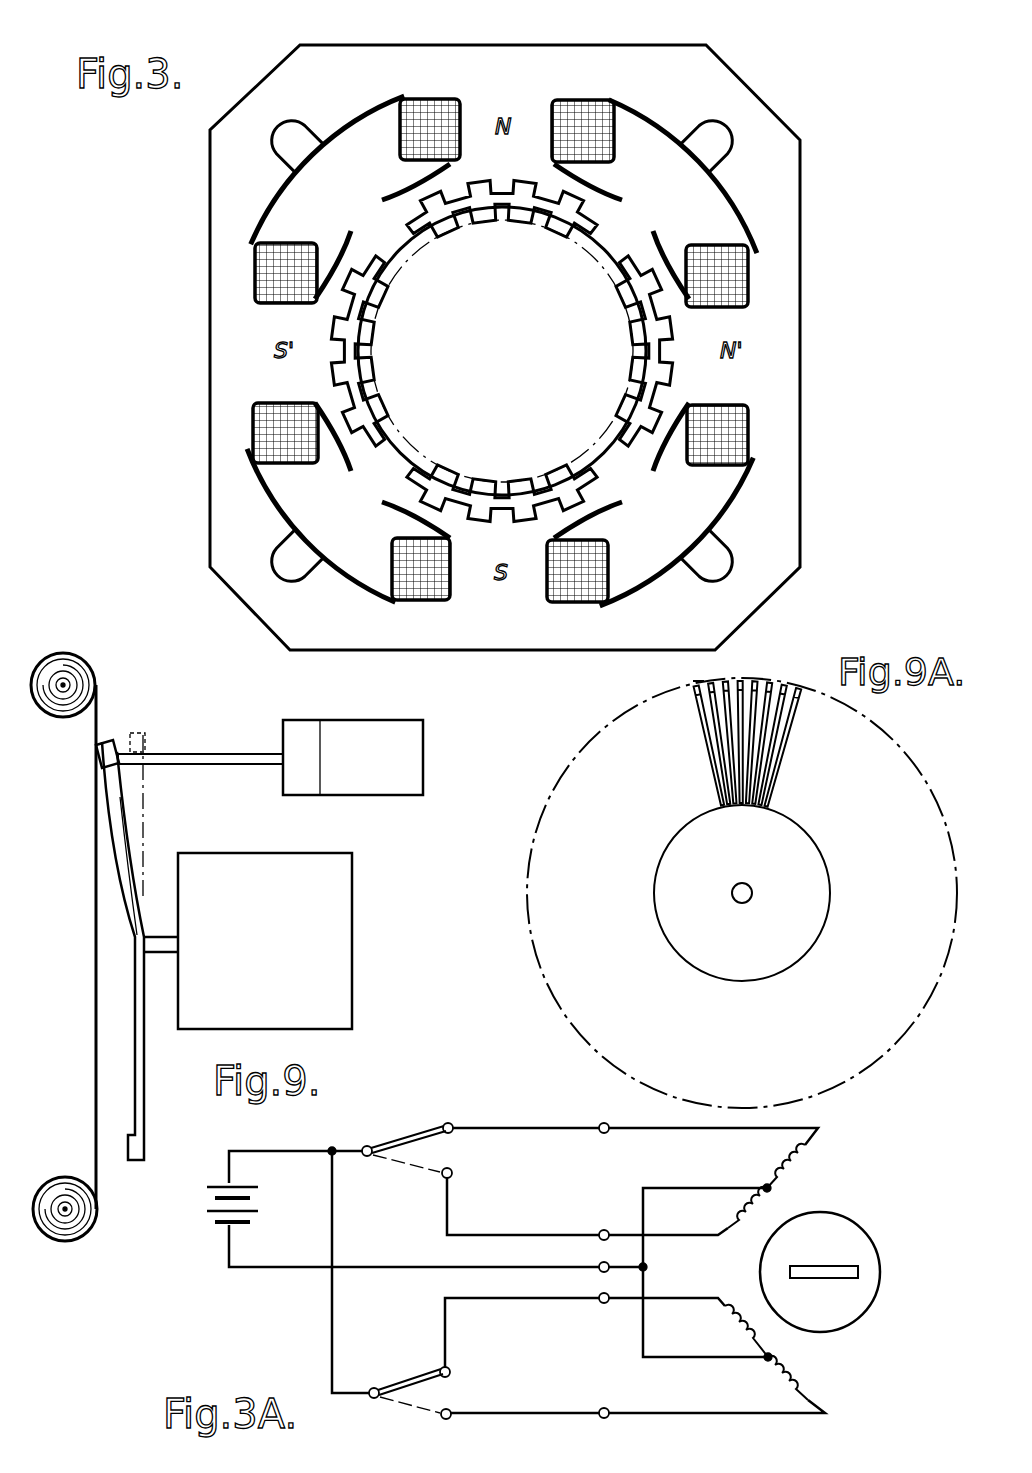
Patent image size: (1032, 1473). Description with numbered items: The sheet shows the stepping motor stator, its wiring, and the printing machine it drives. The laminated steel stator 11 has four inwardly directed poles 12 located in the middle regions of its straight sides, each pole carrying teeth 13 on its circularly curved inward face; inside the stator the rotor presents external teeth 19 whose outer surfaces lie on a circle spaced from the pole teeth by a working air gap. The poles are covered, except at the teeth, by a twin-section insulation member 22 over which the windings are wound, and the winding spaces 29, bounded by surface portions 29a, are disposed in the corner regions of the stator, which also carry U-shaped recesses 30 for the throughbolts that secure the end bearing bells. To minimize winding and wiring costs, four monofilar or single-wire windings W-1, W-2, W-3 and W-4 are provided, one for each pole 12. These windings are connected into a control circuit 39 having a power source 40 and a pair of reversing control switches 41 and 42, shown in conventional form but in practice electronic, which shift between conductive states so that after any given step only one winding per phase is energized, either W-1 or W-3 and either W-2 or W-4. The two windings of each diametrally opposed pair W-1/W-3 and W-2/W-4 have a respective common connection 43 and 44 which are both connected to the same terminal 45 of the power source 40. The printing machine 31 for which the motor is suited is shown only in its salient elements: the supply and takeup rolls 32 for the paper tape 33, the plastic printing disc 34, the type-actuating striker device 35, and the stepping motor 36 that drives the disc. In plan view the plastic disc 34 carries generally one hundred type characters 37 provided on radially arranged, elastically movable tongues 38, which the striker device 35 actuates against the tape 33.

In FIG. 3, the laminated steel stator 11 is at (814, 392).
In FIG. 3, the stator poles 12 is at (487, 102).
In FIG. 3, the teeth 13 is at (407, 189).
In FIG. 3, the external teeth 19 is at (485, 487).
In FIG. 3, the twin-section insulation member 22 is at (338, 582).
In FIG. 3, the winding spaces 29 is at (352, 519).
In FIG. 3, the surface portions of the winding spaces 29a is at (262, 490).
In FIG. 3, the U-shaped recesses 30 is at (308, 118).
In FIG. 3A, the printing machine 31 is at (146, 671).
In FIG. 3A, the supply/takeup rolls 32 is at (58, 720).
In FIG. 3A, the paper tape 33 is at (94, 934).
In FIG. 3A, the plastic printing disc 34 is at (145, 1066).
In FIG. 9A, the plastic printing disc 34 is at (552, 930).
In FIG. 3A, the type-actuating striker device 35 is at (293, 720).
In FIG. 3A, the stepping motor 36 is at (352, 943).
In FIG. 9, the stepping motor 36 is at (877, 1243).
In FIG. 3A, the type characters 37 is at (100, 742).
In FIG. 9A, the type characters 37 is at (693, 683).
In FIG. 3A, the elastically movable tongues 38 is at (122, 797).
In FIG. 9A, the elastically movable tongues 38 is at (712, 760).
In FIG. 9, the control circuit 39 is at (547, 1112).
In FIG. 9, the power source 40 is at (210, 1214).
In FIG. 9, the reversing control switch 41 is at (392, 1140).
In FIG. 9, the reversing control switch 42 is at (400, 1384).
In FIG. 9, the common connection 43 is at (765, 1185).
In FIG. 9, the common connection 44 is at (765, 1362).
In FIG. 9, the terminal 45 is at (652, 1267).
In FIG. 3, the monofilar winding W-1 is at (610, 100).
In FIG. 9, the monofilar winding W-1 is at (800, 1160).
In FIG. 3, the monofilar winding W-2 is at (750, 270).
In FIG. 9, the monofilar winding W-2 is at (770, 1332).
In FIG. 3, the monofilar winding W-3 is at (440, 602).
In FIG. 9, the monofilar winding W-3 is at (750, 1216).
In FIG. 3, the monofilar winding W-4 is at (255, 426).
In FIG. 9, the monofilar winding W-4 is at (810, 1378).